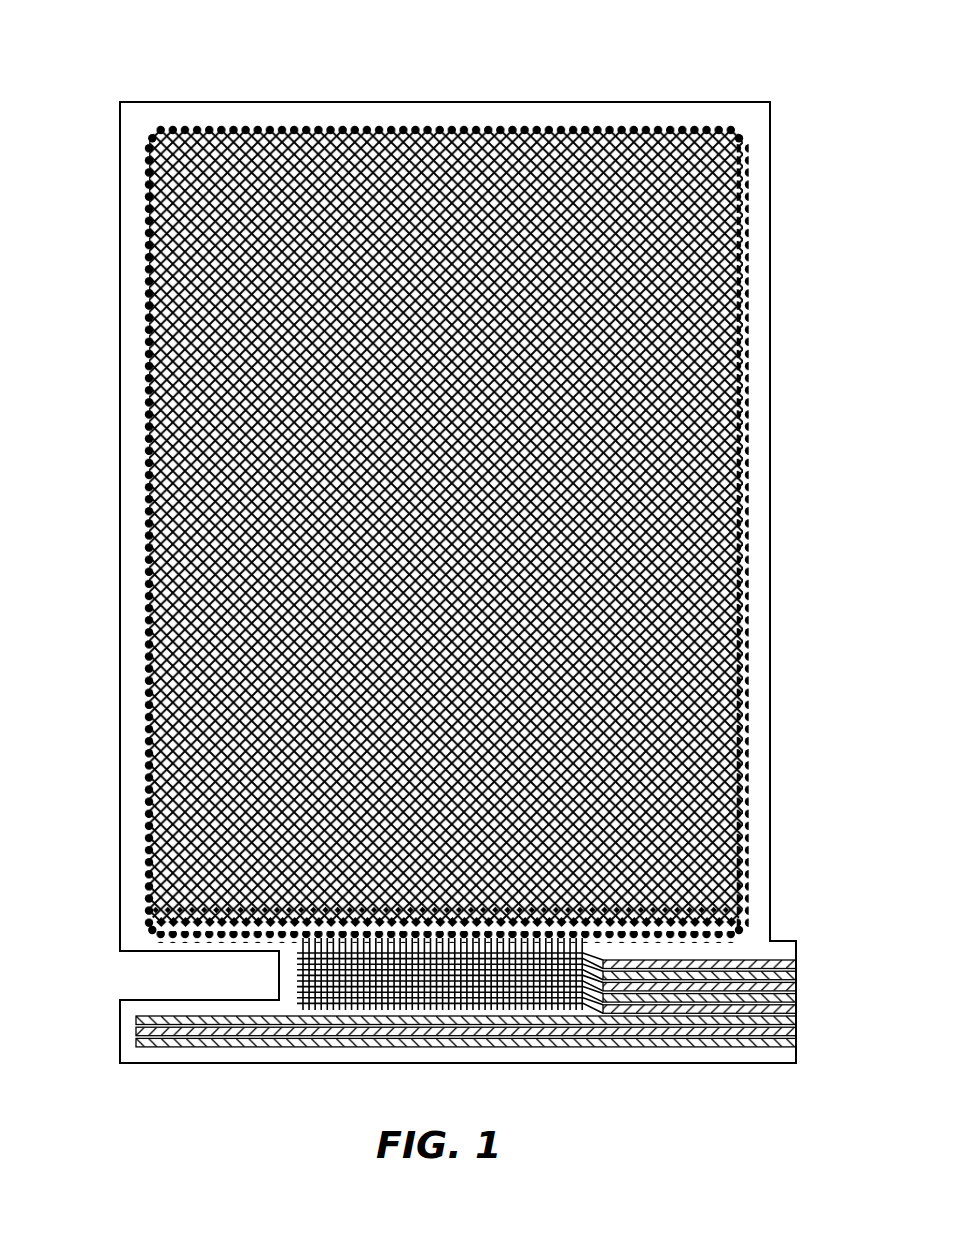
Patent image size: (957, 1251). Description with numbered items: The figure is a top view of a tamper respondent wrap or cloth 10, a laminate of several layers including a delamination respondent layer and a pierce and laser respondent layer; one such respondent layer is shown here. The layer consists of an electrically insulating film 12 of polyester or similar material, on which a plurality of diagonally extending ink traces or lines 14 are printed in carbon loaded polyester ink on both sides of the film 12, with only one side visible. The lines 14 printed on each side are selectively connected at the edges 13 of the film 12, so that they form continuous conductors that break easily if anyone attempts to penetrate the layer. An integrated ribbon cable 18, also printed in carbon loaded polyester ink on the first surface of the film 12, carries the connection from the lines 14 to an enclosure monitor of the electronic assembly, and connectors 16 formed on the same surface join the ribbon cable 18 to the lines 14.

The tamper respondent wrap 10 is at (806, 55).
The electrically insulating film 12 is at (757, 527).
The edges of the film 13 is at (110, 680).
The ink traces or lines 14 is at (714, 610).
The connectors 16 is at (306, 980).
The integrated ribbon cable 18 is at (710, 1046).